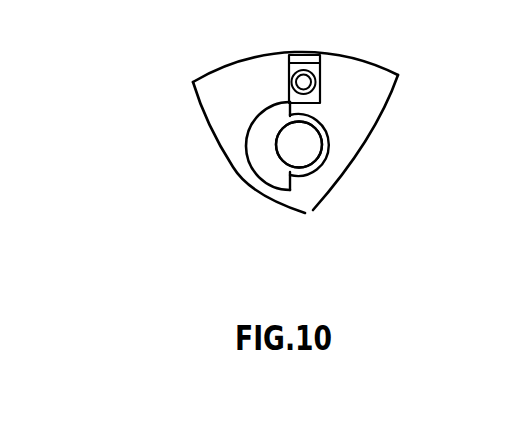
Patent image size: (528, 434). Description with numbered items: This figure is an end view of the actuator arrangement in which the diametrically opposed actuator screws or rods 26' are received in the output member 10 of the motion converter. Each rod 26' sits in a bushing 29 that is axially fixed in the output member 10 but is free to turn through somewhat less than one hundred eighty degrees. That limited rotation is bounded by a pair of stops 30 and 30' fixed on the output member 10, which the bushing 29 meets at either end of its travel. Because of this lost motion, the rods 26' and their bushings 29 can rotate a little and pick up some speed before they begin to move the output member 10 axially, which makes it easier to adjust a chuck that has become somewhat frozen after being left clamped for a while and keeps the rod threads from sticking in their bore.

The output member 10 is at (358, 90).
The actuator screw or rod 26' is at (402, 122).
The bushing 29 is at (323, 170).
The stop 30 is at (312, 206).
The stop 30' is at (200, 145).